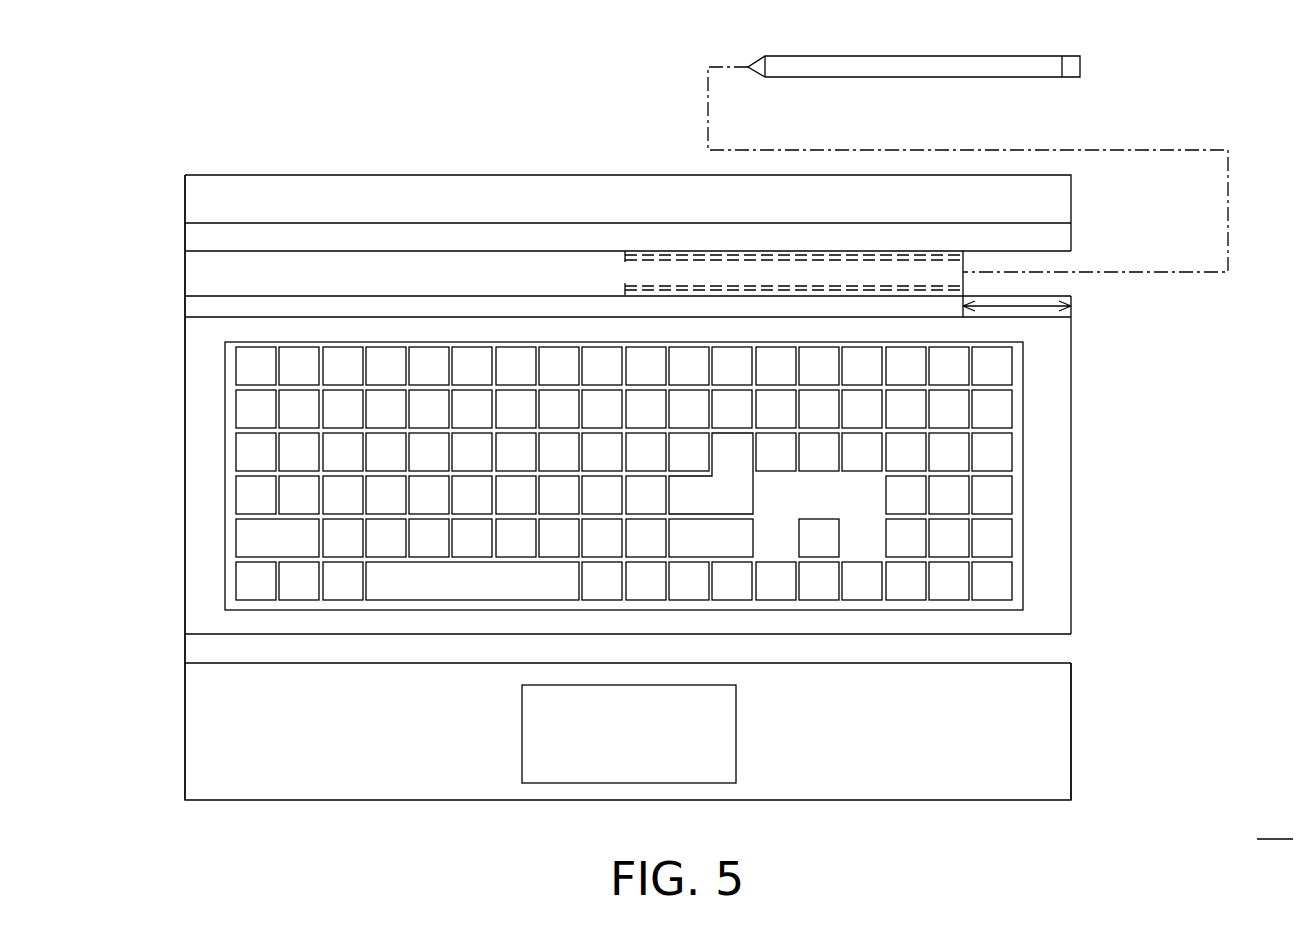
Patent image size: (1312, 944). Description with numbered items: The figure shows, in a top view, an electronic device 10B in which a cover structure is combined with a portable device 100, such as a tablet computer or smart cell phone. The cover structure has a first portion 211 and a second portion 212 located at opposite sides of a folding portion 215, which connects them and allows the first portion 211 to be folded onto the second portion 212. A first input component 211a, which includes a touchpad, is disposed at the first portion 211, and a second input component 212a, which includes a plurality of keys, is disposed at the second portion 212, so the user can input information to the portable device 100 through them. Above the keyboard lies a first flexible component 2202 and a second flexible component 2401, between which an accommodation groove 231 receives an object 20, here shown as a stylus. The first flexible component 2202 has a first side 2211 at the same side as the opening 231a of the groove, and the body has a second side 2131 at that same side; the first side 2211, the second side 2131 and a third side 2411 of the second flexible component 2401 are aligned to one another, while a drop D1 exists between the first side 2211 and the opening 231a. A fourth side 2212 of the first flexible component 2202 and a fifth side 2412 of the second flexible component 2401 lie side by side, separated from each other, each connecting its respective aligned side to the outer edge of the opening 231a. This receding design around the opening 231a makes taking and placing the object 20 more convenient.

The object 20 is at (885, 65).
The portable device 100 is at (273, 185).
The second flexible component 2401 is at (200, 237).
The third side 2411 is at (1072, 234).
The fifth side 2412 is at (1052, 254).
The opening 231a is at (975, 283).
The accommodation groove 231 is at (642, 275).
The first flexible component 2202 is at (200, 308).
The fourth side 2212 is at (1052, 293).
The first side 2211 is at (1072, 314).
The drop D1 is at (1017, 306).
The second side 2131 is at (1073, 477).
The second portion 212 is at (1055, 583).
The second input component 212a is at (1003, 500).
The folding portion 215 is at (1055, 655).
The first portion 211 is at (1048, 763).
The first input component 211a is at (690, 765).
The electronic device 10B is at (1275, 825).